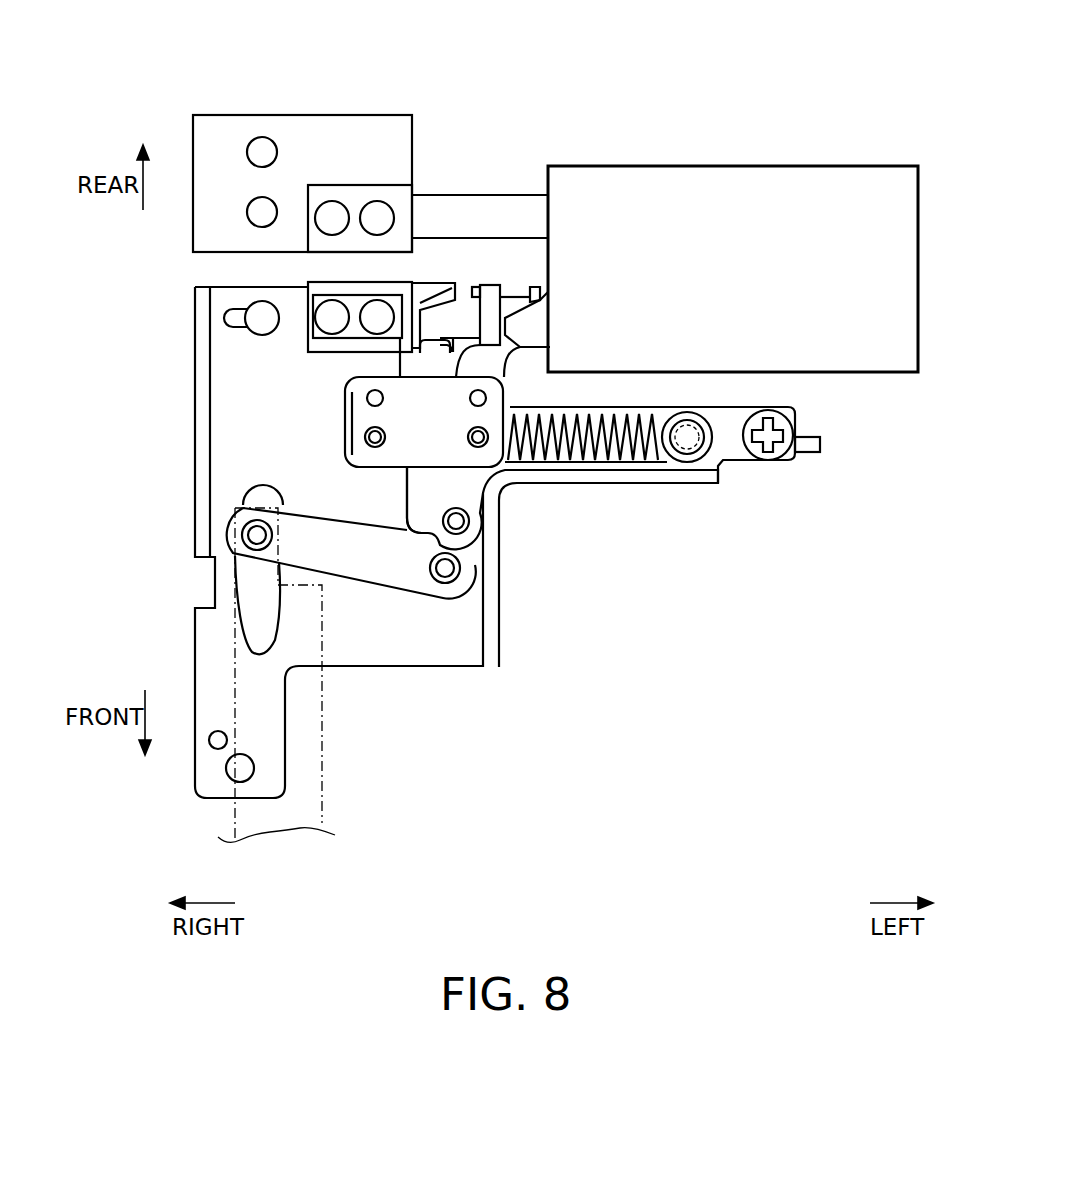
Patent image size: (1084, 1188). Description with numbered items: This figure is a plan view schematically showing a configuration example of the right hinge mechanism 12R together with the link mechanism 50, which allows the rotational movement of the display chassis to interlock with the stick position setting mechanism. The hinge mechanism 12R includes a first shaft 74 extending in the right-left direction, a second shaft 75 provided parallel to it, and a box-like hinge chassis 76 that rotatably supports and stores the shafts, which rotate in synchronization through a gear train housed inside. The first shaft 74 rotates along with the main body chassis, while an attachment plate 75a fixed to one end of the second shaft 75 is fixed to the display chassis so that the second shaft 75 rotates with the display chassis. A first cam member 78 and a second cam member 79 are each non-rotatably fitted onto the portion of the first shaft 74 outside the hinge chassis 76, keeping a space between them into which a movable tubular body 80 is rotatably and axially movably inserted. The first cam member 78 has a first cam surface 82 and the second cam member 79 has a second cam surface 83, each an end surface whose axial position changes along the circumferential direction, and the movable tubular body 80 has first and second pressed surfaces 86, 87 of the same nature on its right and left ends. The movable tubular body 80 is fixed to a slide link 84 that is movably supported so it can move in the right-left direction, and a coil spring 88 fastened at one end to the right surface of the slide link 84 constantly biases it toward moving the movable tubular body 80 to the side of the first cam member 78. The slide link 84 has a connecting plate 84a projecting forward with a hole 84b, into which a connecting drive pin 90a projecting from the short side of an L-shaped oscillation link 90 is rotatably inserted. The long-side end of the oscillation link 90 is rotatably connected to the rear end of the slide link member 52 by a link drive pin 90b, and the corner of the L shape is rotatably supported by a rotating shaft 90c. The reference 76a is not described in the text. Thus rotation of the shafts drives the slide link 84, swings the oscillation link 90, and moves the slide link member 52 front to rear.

The right hinge mechanism 12R is at (733, 232).
The link mechanism 50 is at (786, 529).
The slide link member 52 is at (230, 817).
The first shaft 74 is at (463, 300).
The second shaft 75 is at (465, 205).
The attachment plate 75a is at (232, 137).
The hinge chassis 76 is at (826, 180).
The side plate 76a is at (230, 357).
The first cam member 78 is at (540, 315).
The second cam member 79 is at (425, 293).
The movable tubular body 80 is at (502, 293).
The first cam surface 82 is at (549, 302).
The second cam surface 83 is at (405, 353).
The slide link 84 is at (419, 553).
The connecting plate 84a is at (440, 492).
The hole 84b is at (468, 520).
The first pressed surface 86 is at (528, 300).
The second pressed surface 87 is at (492, 285).
The coil spring 88 is at (615, 463).
The oscillation link 90 is at (346, 617).
The connecting drive pin 90a is at (458, 521).
The link drive pin 90b is at (253, 535).
The rotating shaft 90c is at (443, 578).